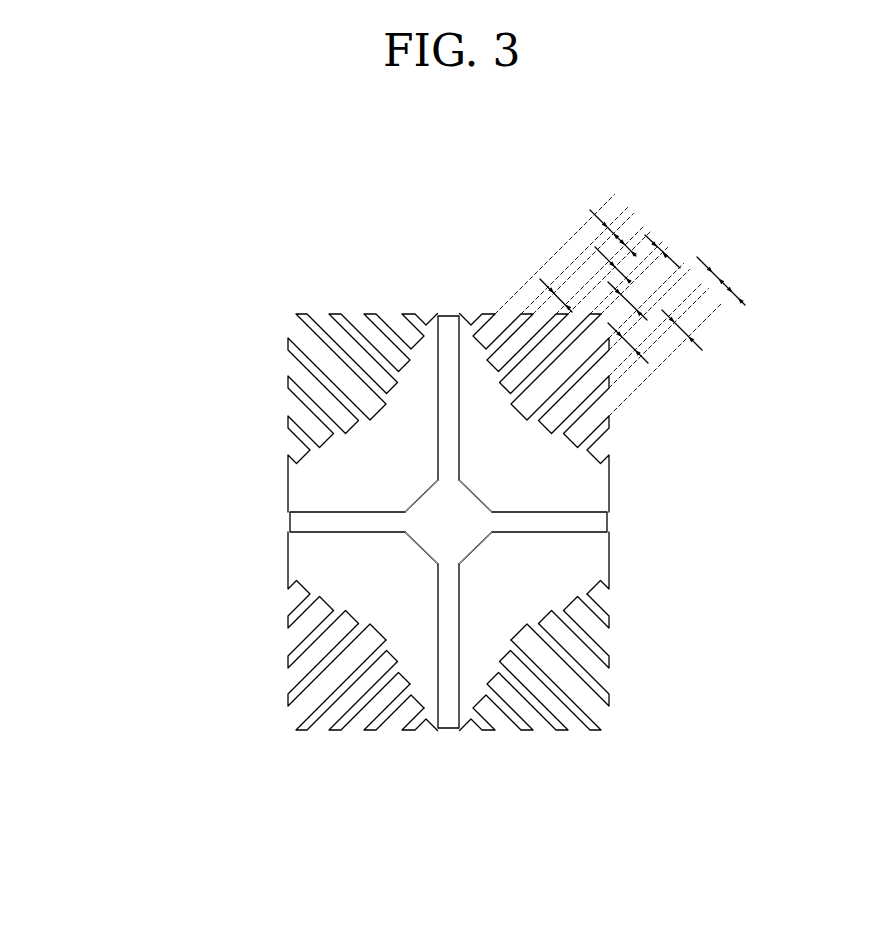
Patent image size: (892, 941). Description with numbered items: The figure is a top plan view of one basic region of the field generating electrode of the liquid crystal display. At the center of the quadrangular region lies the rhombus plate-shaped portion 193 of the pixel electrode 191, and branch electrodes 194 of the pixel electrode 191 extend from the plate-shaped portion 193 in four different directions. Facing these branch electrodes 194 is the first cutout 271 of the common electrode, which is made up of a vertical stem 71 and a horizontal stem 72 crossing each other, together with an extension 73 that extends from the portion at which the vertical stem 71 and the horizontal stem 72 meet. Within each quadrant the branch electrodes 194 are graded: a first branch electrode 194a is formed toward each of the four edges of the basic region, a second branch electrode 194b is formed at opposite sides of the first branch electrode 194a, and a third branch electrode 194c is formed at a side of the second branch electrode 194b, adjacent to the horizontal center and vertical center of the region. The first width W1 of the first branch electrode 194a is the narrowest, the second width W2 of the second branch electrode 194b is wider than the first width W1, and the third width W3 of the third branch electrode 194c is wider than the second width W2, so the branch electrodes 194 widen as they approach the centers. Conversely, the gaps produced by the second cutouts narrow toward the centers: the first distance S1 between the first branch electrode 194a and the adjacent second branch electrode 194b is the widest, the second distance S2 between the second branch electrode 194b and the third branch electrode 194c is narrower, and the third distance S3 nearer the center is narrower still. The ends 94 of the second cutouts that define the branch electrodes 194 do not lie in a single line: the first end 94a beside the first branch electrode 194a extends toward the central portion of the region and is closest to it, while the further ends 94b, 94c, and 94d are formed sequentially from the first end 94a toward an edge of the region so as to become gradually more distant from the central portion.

The pixel electrode 191 is at (133, 540).
The plate-shaped portion 193 is at (342, 558).
The branch electrodes 194 is at (286, 675).
The first branch electrode 194a is at (312, 712).
The second branch electrode 194b is at (303, 675).
The third branch electrode 194c is at (300, 640).
The first cutout 271 is at (377, 522).
The vertical stem 71 is at (437, 366).
The horizontal stem 72 is at (406, 505).
The extension 73 is at (420, 493).
The ends of the second cutouts 94 is at (605, 631).
The first end 94a is at (538, 653).
The third end 94b is at (548, 618).
The fourth end 94c is at (575, 611).
The fourth minute branch 94d is at (608, 598).
The first width W1 is at (656, 246).
The second width W2 is at (591, 211).
The third width W3 is at (616, 236).
The first distance S1 is at (618, 292).
The second distance S2 is at (595, 248).
The third slit width S3 is at (541, 280).